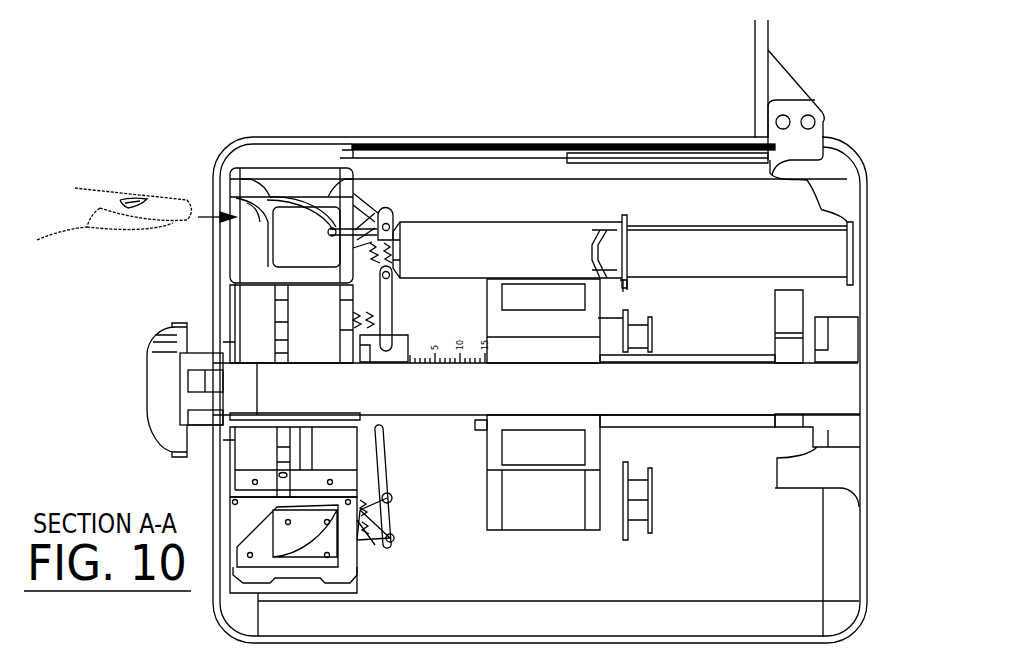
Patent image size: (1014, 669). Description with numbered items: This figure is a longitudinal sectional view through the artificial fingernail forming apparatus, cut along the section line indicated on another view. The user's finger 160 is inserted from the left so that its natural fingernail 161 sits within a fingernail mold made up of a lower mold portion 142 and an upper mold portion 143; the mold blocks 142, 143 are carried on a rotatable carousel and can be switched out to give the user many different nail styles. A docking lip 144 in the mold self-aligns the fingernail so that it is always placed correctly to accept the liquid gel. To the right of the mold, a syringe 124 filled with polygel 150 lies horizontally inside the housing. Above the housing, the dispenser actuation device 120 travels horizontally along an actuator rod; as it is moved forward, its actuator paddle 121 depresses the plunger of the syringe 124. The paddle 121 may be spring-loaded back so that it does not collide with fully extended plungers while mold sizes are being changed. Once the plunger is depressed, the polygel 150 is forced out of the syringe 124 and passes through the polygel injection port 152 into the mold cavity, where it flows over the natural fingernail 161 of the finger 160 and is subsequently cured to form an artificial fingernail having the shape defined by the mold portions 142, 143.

The dispenser actuation device 120 is at (758, 80).
The actuator paddle 121 is at (853, 243).
The syringe 124 is at (703, 267).
The lower mold portion 142 is at (298, 197).
The upper mold portion 143 is at (282, 253).
The docking lip 144 is at (258, 205).
The polygel 150 is at (555, 245).
The polygel injection port 152 is at (372, 230).
The finger 160 is at (95, 192).
The natural fingernail 161 is at (172, 197).